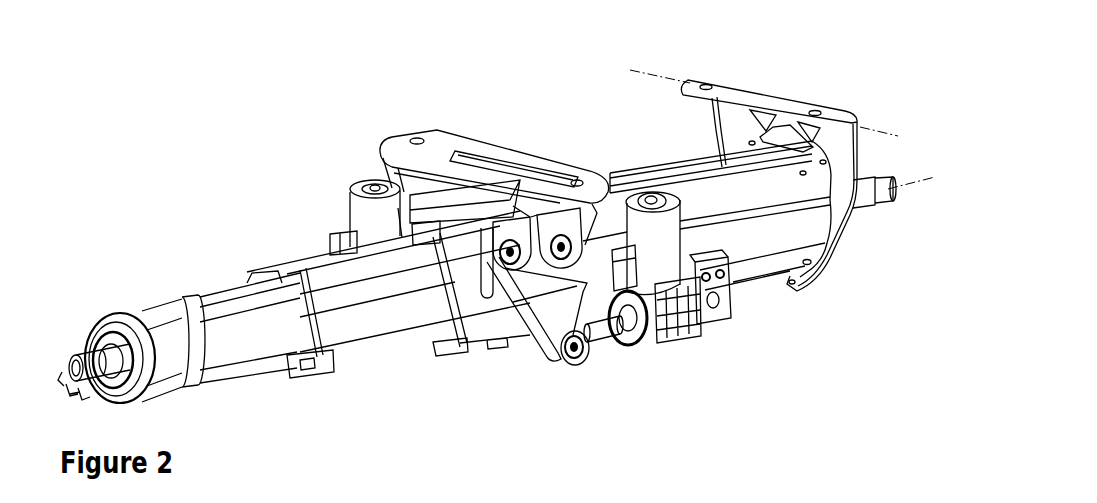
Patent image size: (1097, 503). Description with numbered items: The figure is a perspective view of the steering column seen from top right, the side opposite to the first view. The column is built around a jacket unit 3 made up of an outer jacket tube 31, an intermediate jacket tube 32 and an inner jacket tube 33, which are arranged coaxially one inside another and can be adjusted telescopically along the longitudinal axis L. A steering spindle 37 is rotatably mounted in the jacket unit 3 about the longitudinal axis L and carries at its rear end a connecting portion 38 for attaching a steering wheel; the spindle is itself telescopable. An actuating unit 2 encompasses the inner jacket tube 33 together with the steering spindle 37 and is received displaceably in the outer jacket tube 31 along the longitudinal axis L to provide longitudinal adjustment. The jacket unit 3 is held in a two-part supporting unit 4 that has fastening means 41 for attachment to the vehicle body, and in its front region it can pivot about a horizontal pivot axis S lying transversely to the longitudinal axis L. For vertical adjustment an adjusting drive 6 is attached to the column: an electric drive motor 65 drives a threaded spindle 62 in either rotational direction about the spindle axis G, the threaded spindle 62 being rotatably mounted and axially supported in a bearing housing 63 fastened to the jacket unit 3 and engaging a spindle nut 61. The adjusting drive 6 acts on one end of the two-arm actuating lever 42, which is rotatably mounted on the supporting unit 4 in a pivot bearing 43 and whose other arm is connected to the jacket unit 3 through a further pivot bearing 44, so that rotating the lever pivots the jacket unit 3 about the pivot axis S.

The actuating unit 2 is at (229, 392).
The jacket unit 3 is at (760, 250).
The outer jacket tube 31 is at (712, 187).
The intermediate jacket tube 32 is at (397, 318).
The inner jacket tube 33 is at (261, 350).
The steering spindle 37 is at (115, 347).
The connecting portion 38 is at (87, 352).
The supporting unit 4 is at (770, 99).
The fastening means 41 is at (707, 82).
The actuating lever 42 is at (537, 312).
The pivot bearing 43 is at (566, 236).
The further pivot bearing 44 is at (513, 243).
The adjusting drive 6 is at (658, 363).
The spindle nut 61 is at (650, 340).
The threaded spindle 62 is at (616, 338).
The bearing housing 63 is at (677, 347).
The electric drive motor 65 is at (703, 333).
The spindle axis G is at (493, 376).
The pivot axis S is at (897, 137).
The longitudinal axis L is at (928, 180).